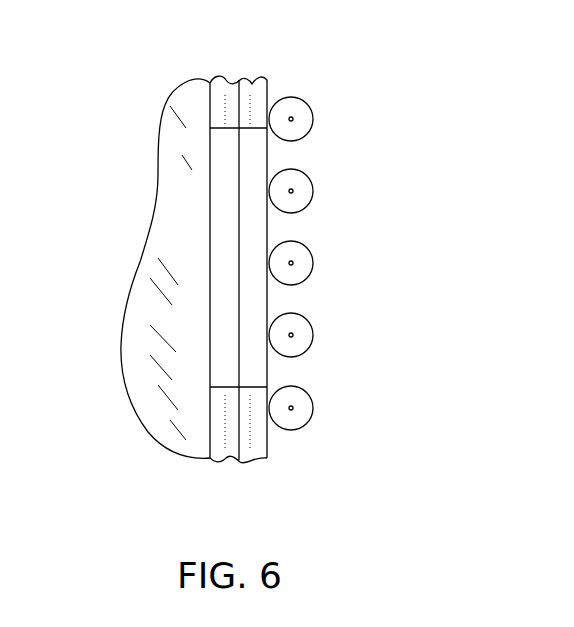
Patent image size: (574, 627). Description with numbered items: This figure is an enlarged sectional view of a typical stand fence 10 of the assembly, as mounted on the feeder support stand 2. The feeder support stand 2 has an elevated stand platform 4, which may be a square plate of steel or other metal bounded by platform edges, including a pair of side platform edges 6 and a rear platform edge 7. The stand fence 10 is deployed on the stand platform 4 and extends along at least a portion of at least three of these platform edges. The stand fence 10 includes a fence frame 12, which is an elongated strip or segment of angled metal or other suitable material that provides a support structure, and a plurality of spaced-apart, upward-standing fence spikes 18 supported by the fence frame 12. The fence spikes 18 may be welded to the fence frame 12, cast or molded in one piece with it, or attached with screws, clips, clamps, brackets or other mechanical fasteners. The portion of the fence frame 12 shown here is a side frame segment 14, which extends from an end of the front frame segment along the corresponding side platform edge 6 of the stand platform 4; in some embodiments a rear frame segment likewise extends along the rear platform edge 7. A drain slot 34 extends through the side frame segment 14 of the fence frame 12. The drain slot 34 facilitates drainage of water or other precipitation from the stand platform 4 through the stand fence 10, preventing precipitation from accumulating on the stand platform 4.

The feeder support stand 2 is at (316, 379).
The stand platform 4 is at (124, 430).
The side platform edge 6 is at (257, 78).
The rear platform edge 7 is at (240, 23).
The stand fence 10 is at (317, 104).
The fence frame 12 is at (279, 299).
The side frame segment 14 is at (252, 446).
The fence spikes 18 is at (315, 195).
The drain slot 34 is at (210, 155).